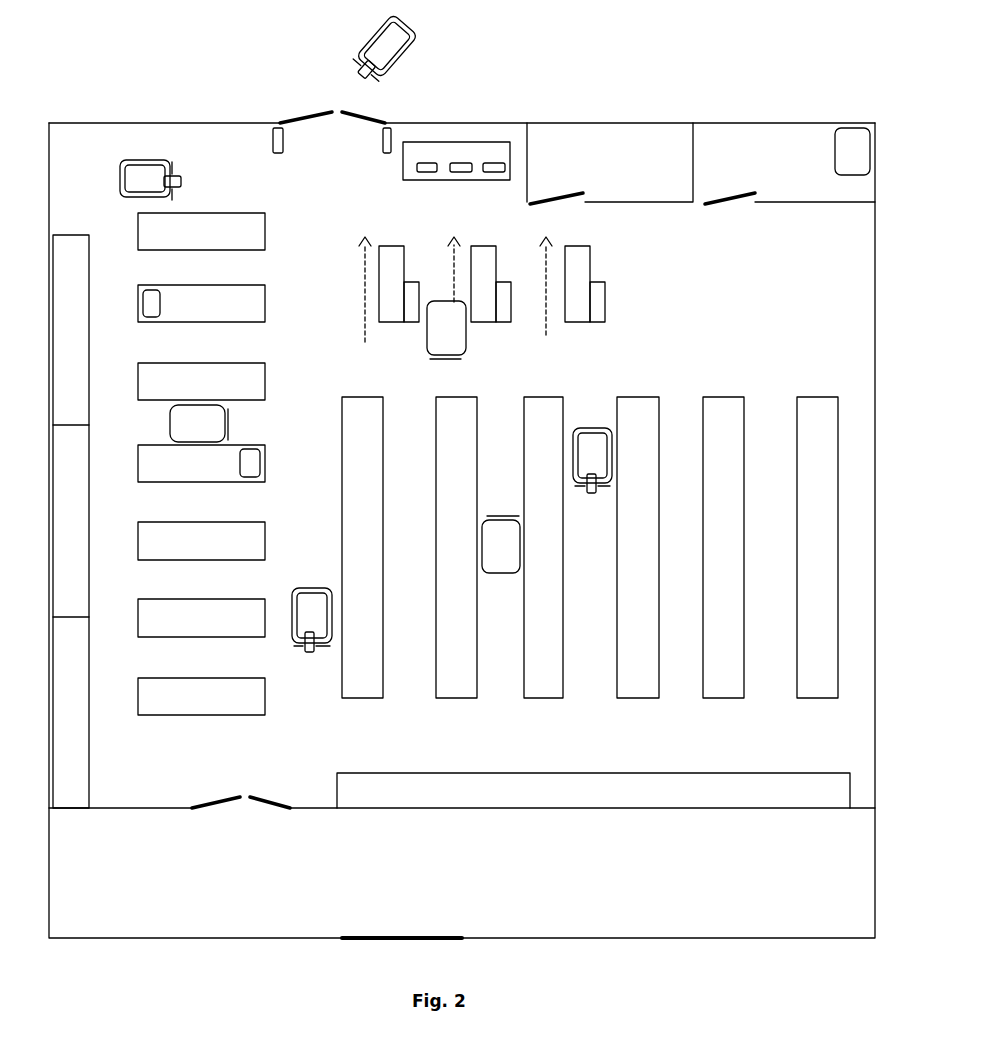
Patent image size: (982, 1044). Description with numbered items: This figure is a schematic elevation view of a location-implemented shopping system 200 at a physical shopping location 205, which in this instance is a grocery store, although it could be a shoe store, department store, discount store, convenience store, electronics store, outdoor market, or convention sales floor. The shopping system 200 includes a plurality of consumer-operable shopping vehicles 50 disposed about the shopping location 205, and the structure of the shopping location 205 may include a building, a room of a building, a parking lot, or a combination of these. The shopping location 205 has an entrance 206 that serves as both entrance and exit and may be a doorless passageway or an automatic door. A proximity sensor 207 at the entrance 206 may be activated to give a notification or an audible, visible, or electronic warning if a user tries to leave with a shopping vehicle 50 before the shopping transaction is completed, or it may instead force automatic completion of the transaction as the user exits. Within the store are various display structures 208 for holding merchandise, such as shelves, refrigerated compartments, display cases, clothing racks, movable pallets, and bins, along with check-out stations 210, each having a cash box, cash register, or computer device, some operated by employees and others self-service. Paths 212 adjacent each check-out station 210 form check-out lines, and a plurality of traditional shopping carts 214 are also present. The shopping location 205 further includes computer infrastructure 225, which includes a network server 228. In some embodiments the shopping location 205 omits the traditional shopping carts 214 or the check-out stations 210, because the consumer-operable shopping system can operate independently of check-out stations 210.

The shopping vehicle 50 is at (155, 163).
The location-implemented shopping system 200 is at (96, 52).
The shopping location 205 is at (128, 123).
The entrance 206 is at (307, 112).
The proximity sensor 207 is at (272, 138).
The display structure 208 is at (265, 233).
The check-out station 210 is at (392, 250).
The path 212 is at (460, 240).
The traditional shopping cart 214 is at (466, 345).
The computer infrastructure 225 is at (850, 140).
The network server 228 is at (838, 160).